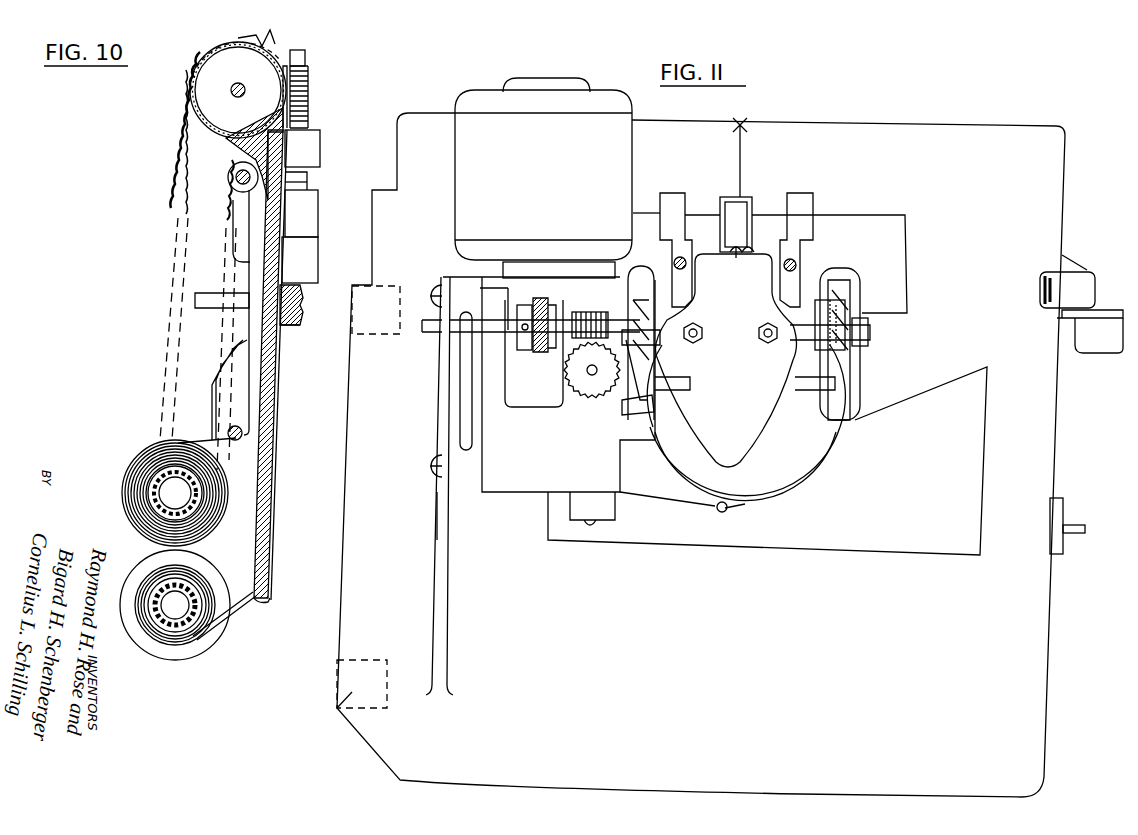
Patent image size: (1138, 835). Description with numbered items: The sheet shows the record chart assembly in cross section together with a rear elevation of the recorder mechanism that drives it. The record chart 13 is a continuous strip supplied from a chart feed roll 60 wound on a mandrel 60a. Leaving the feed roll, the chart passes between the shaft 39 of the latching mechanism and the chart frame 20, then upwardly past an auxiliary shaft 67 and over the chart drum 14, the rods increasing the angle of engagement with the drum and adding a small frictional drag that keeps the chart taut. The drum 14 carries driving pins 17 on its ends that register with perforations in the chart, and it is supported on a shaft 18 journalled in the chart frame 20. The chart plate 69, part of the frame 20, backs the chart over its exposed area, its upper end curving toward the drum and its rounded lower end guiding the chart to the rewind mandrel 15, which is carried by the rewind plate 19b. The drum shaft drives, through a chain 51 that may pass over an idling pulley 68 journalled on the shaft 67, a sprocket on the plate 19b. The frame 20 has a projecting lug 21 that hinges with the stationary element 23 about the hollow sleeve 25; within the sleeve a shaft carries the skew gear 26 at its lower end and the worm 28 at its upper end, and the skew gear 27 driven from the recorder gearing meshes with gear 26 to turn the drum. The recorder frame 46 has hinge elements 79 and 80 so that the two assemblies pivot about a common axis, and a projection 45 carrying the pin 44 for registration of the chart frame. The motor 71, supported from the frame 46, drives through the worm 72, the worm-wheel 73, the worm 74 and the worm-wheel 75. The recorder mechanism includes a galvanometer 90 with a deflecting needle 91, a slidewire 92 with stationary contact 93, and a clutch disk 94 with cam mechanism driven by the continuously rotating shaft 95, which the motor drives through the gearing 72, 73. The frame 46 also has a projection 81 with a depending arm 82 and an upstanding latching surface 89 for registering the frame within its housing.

In FIG. 10, the chart drum 14 is at (207, 51).
In FIG. 10, the driving pins 17 is at (256, 33).
In FIG. 10, the shaft 18 is at (232, 93).
In FIG. 10, the worm 28 is at (311, 70).
In FIG. 10, the chain 51 is at (180, 134).
In FIG. 10, the idling pulley 68 is at (237, 183).
In FIG. 10, the record chart 13 is at (278, 388).
In FIG. 10, the chart plate 69 is at (270, 478).
In FIG. 10, the chart frame 20 is at (252, 412).
In FIG. 10, the shaft 39 is at (244, 434).
In FIG. 10, the chart feed roll 60 is at (145, 458).
In FIG. 10, the mandrel 60a is at (150, 487).
In FIG. 10, the rewind plate 19b is at (198, 648).
In FIG. 10, the rewind mandrel 15 is at (158, 633).
In FIG. 10, the projecting lug 21 is at (318, 150).
In FIG. 10, the auxiliary shaft 67 is at (262, 180).
In FIG. 10, the hollow sleeve 25 is at (305, 186).
In FIG. 10, the hinge element 79 is at (318, 222).
In FIG. 11, the hinge element 79 is at (365, 330).
In FIG. 10, the stationary hinge element 23 is at (308, 260).
In FIG. 10, the skew gear 26 is at (300, 300).
In FIG. 10, the skew gear 27 is at (298, 325).
In FIG. 11, the frame 46 is at (1047, 212).
In FIG. 11, the hinge element 80 is at (337, 708).
In FIG. 11, the motor 71 is at (458, 218).
In FIG. 11, the worm-wheel 73 is at (535, 350).
In FIG. 11, the worm 72 is at (552, 350).
In FIG. 11, the worm 74 is at (585, 312).
In FIG. 11, the worm-wheel 75 is at (592, 398).
In FIG. 11, the galvanometer 90 is at (743, 196).
In FIG. 11, the deflecting needle 91 is at (752, 248).
In FIG. 11, the clutch disk 94 is at (780, 440).
In FIG. 11, the slidewire 92 is at (792, 490).
In FIG. 11, the stationary contact 93 is at (728, 512).
In FIG. 11, the continuously rotating shaft 95 is at (825, 348).
In FIG. 11, the latching surface 89 is at (1075, 283).
In FIG. 11, the projection 81 is at (1098, 310).
In FIG. 11, the depending arm 82 is at (1103, 352).
In FIG. 11, the projection 45 is at (1055, 505).
In FIG. 11, the pin 44 is at (1078, 532).